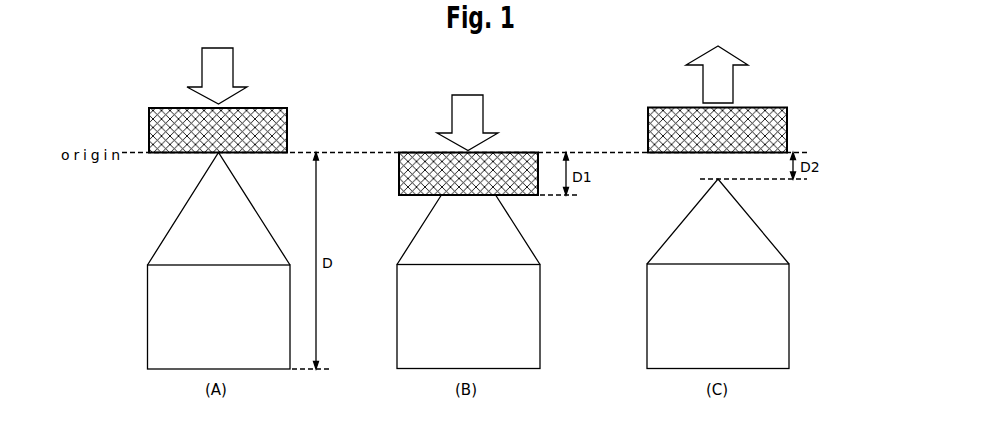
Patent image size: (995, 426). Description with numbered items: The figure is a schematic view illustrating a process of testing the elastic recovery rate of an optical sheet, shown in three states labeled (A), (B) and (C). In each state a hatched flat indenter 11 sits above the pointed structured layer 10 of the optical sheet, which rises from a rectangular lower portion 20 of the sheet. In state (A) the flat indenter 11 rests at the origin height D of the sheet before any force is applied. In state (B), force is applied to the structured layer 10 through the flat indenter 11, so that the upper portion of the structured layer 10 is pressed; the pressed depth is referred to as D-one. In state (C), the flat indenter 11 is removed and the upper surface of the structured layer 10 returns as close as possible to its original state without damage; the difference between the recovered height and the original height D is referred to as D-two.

The structured layer 10 is at (177, 230).
The flat indenter 11 is at (648, 127).
The body 20 is at (150, 318).